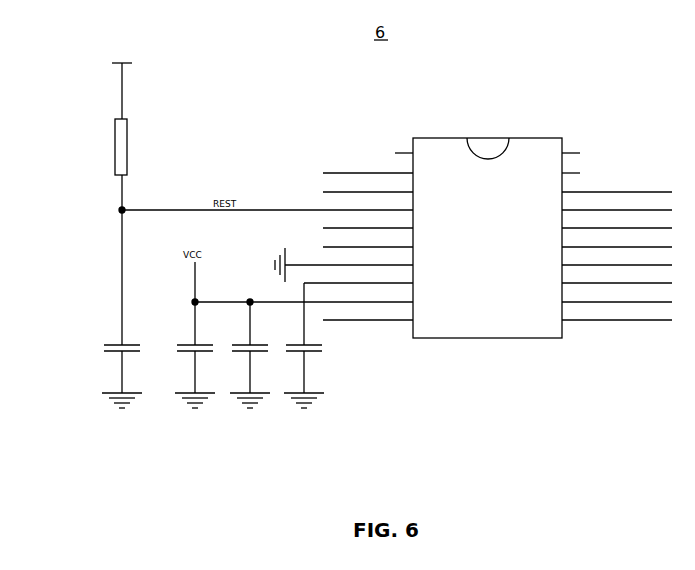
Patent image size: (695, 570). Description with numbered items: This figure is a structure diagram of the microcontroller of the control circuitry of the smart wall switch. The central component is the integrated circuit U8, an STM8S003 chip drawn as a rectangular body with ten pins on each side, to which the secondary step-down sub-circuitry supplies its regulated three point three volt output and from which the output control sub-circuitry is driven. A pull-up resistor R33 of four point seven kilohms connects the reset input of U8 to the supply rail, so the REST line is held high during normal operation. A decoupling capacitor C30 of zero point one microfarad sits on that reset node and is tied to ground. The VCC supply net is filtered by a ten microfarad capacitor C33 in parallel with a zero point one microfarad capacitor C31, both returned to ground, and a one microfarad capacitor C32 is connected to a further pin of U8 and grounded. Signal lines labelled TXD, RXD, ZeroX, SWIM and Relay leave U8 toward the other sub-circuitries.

The resistor 4.7K R33 is at (131, 136).
The capacitor 0.1uF C30 is at (130, 309).
The capacitor 10uF C33 is at (202, 335).
The capacitor 0.1uF C31 is at (256, 353).
The capacitor 1uF C32 is at (348, 345).
The microcontroller STM8S003 U8 is at (497, 241).